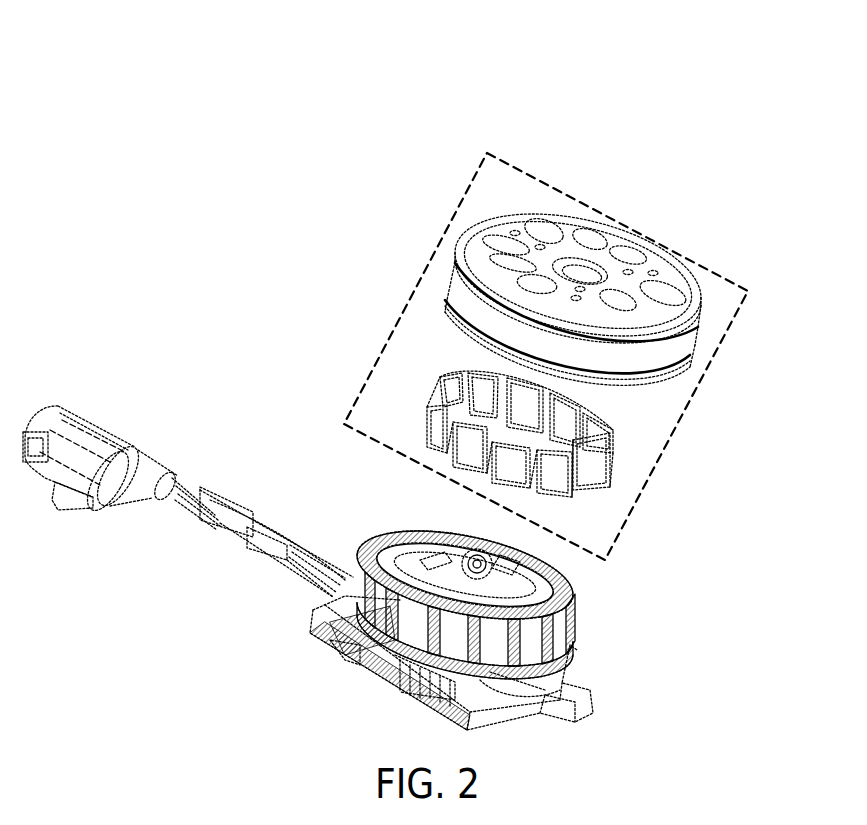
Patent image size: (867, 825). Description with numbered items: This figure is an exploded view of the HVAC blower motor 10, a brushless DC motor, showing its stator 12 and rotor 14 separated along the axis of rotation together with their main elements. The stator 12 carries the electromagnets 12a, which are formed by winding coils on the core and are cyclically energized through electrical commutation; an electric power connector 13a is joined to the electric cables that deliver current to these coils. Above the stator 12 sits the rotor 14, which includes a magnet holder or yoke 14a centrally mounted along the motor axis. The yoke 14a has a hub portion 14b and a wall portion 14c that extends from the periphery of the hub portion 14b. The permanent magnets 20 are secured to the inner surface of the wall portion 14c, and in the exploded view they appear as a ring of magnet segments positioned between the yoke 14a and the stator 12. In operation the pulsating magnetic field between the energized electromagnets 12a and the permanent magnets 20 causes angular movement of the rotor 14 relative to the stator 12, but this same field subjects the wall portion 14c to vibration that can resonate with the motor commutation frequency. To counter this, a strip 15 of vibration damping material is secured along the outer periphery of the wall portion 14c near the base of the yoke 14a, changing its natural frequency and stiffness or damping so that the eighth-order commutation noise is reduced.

The HVAC blower motor 10 is at (600, 153).
The stator 12 is at (440, 569).
The electromagnets 12a is at (576, 600).
The electric power connector 13a is at (101, 450).
The rotor 14 is at (583, 231).
The yoke 14a is at (682, 274).
The hub portion 14b is at (505, 228).
The wall portion 14c is at (690, 326).
The strip of vibration damping material 15 is at (680, 355).
The permanent magnets 20 is at (430, 408).